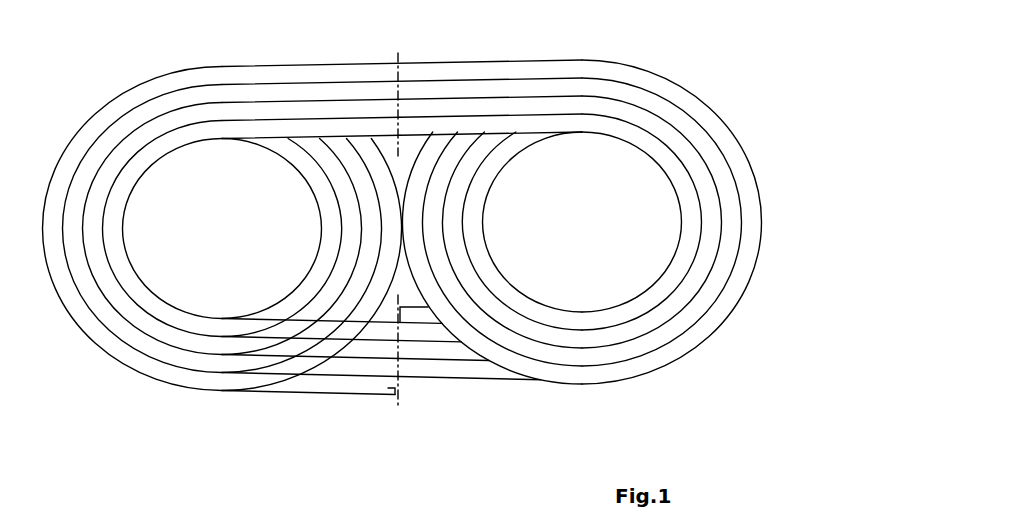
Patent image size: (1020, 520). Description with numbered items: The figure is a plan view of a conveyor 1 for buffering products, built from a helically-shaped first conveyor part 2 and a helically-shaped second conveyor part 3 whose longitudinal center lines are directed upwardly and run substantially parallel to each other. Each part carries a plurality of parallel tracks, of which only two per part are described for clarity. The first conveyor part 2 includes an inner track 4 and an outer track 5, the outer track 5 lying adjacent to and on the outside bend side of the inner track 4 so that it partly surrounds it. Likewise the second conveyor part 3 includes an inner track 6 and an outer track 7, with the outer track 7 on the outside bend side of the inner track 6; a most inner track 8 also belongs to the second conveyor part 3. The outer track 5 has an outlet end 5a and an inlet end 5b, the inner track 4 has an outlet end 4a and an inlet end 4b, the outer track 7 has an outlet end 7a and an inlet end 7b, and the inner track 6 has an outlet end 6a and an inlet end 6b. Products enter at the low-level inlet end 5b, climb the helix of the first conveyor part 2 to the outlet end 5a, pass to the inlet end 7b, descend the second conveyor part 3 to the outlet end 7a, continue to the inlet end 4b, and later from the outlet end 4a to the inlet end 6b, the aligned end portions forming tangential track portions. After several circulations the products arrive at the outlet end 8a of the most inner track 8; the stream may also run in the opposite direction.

The conveyor 1 is at (94, 84).
The first conveyor part 2 is at (114, 84).
The second conveyor part 3 is at (665, 73).
The inner track 4 is at (142, 345).
The outer track 5 is at (152, 367).
The outlet end 4a is at (382, 93).
The inlet end 4b is at (397, 368).
The outlet end 5a is at (388, 70).
The inlet end 5b is at (388, 388).
The inner track 6 is at (603, 355).
The outer track 7 is at (585, 373).
The most inner track 8 is at (565, 320).
The outlet end 6a is at (405, 350).
The inlet end 6b is at (410, 93).
The outlet end 7a is at (403, 373).
The inlet end 7b is at (405, 70).
The outlet end 8a is at (403, 315).